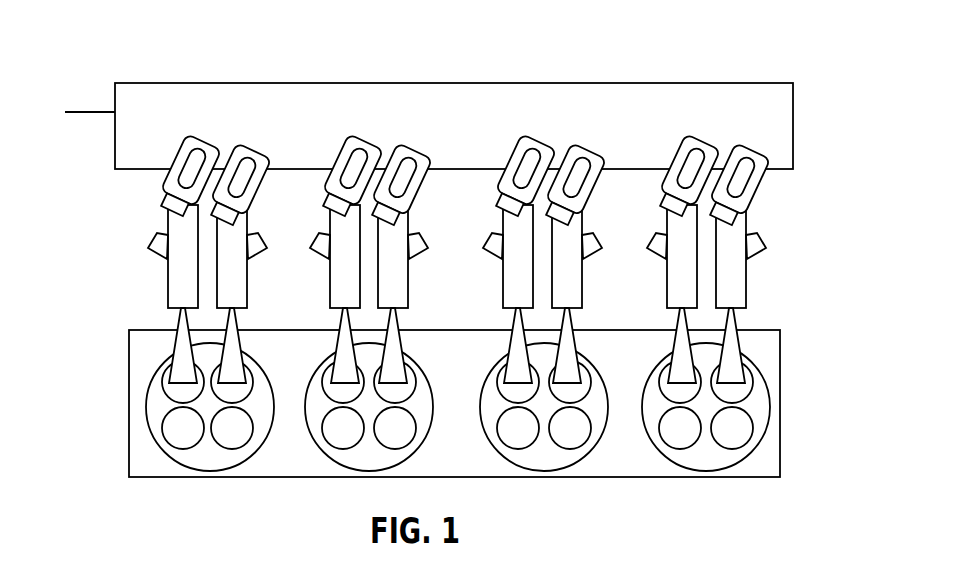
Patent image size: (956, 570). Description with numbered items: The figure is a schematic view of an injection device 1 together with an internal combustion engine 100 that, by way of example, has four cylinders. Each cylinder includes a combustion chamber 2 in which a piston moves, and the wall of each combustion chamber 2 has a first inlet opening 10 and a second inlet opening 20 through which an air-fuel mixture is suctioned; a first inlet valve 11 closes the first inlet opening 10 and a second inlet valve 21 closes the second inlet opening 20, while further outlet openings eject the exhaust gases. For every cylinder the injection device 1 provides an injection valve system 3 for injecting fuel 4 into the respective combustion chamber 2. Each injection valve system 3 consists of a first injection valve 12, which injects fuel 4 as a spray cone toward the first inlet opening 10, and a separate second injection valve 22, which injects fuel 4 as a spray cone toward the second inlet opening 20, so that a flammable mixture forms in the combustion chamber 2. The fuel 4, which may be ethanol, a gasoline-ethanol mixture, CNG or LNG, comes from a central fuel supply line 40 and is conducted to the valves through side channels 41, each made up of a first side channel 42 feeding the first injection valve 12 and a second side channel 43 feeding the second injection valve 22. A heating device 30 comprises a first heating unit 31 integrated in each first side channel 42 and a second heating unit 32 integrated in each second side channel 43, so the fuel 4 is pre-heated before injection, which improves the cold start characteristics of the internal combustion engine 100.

The injection device 1 is at (440, 280).
The combustion chamber 2 is at (183, 440).
The injection valve system 3 is at (190, 256).
The fuel 4 is at (183, 342).
The first inlet opening 10 is at (160, 407).
The first inlet valve 11 is at (178, 395).
The first injection valve 12 is at (180, 279).
The second inlet opening 20 is at (265, 449).
The second inlet valve 21 is at (243, 392).
The second injection valve 22 is at (238, 287).
The heating device 30 is at (160, 128).
The first heating unit 31 is at (165, 187).
The second heating unit 32 is at (246, 150).
The fuel supply line 40 is at (438, 93).
The side channels 41 is at (205, 181).
The first side channel 42 is at (158, 221).
The second side channel 43 is at (253, 208).
The internal combustion engine 100 is at (440, 388).